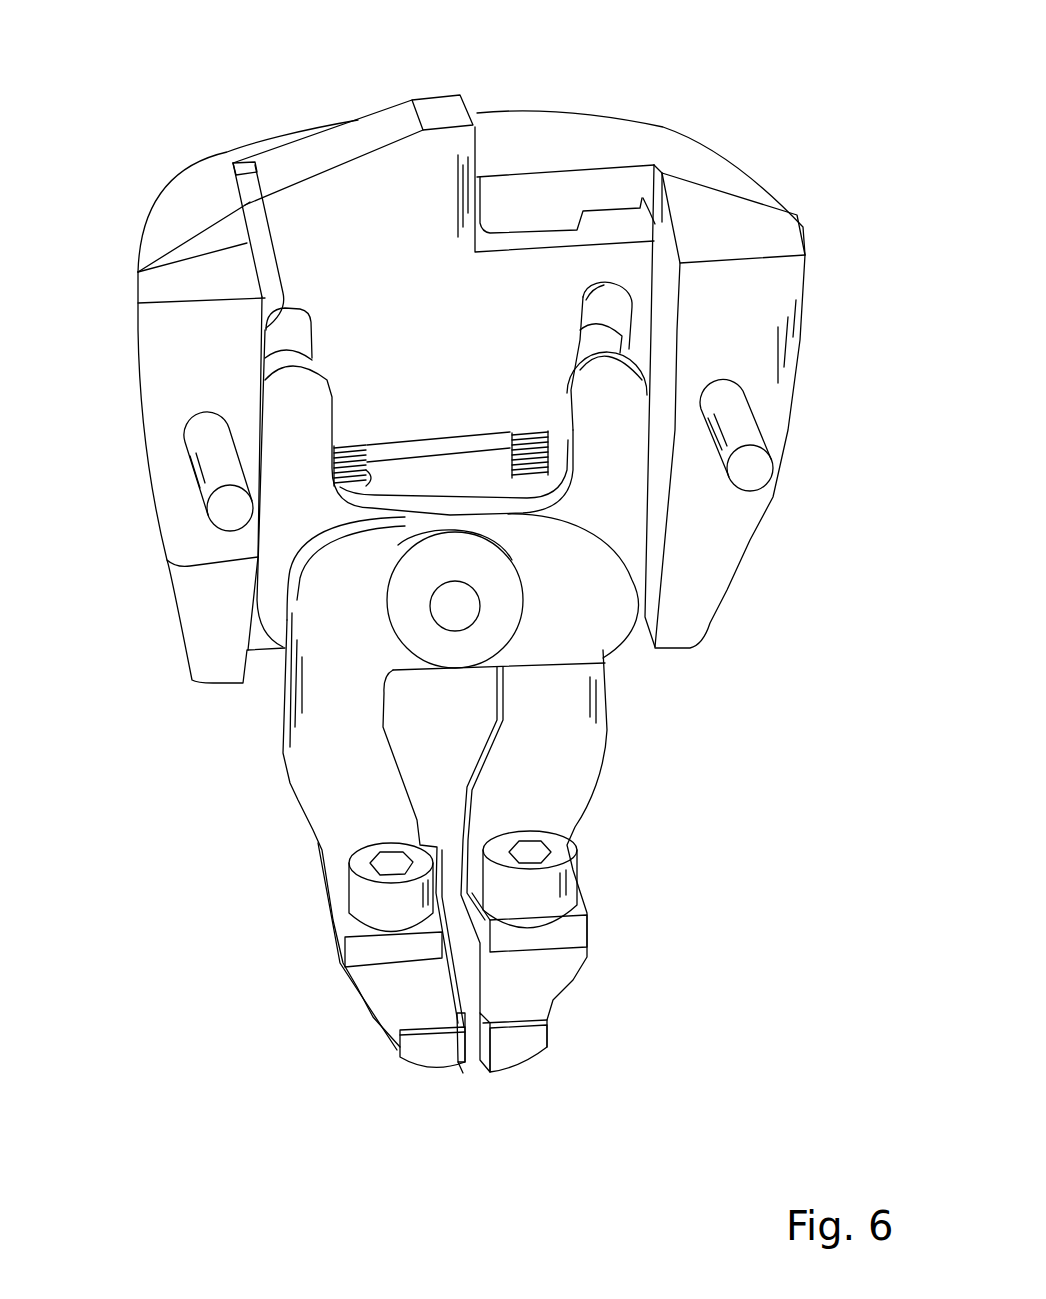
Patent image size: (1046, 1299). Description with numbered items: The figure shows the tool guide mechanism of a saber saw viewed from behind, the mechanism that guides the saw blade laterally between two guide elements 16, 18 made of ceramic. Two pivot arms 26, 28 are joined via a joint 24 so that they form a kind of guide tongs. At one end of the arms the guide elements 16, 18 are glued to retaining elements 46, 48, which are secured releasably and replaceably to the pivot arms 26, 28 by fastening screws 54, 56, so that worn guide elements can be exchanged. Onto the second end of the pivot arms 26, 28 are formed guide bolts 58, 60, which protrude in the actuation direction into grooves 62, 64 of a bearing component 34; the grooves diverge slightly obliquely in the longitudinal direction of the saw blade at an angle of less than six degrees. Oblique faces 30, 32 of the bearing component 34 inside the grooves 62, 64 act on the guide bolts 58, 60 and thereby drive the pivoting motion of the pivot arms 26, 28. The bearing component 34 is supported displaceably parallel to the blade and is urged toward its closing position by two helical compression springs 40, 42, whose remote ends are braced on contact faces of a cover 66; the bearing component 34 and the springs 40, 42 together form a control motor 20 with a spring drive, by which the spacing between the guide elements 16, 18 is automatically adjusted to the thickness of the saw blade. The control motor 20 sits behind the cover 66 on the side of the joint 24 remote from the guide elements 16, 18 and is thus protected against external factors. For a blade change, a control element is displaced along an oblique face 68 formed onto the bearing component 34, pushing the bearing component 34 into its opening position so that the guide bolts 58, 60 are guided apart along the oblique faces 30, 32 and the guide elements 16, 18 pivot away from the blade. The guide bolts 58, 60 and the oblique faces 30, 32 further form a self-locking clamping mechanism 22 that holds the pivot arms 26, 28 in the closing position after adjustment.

The guide element 16 is at (487, 1055).
The guide element 18 is at (462, 1055).
The control motor 20 is at (657, 317).
The clamping mechanism 22 is at (593, 310).
The joint 24 is at (455, 602).
The pivot arm 26 is at (547, 753).
The pivot arm 28 is at (357, 770).
The oblique face 30 is at (628, 316).
The oblique face 32 is at (283, 292).
The bearing component 34 is at (477, 163).
The helical compression spring 40 is at (557, 473).
The helical compression spring 42 is at (340, 468).
The retaining element 46 is at (522, 1043).
The retaining element 48 is at (428, 1052).
The fastening screw 54 is at (545, 887).
The fastening screw 56 is at (390, 902).
The guide bolt 58 is at (595, 343).
The guide bolt 60 is at (265, 358).
The groove 62 is at (610, 313).
The groove 64 is at (282, 341).
The cover 66 is at (720, 522).
The oblique face 68 is at (330, 155).